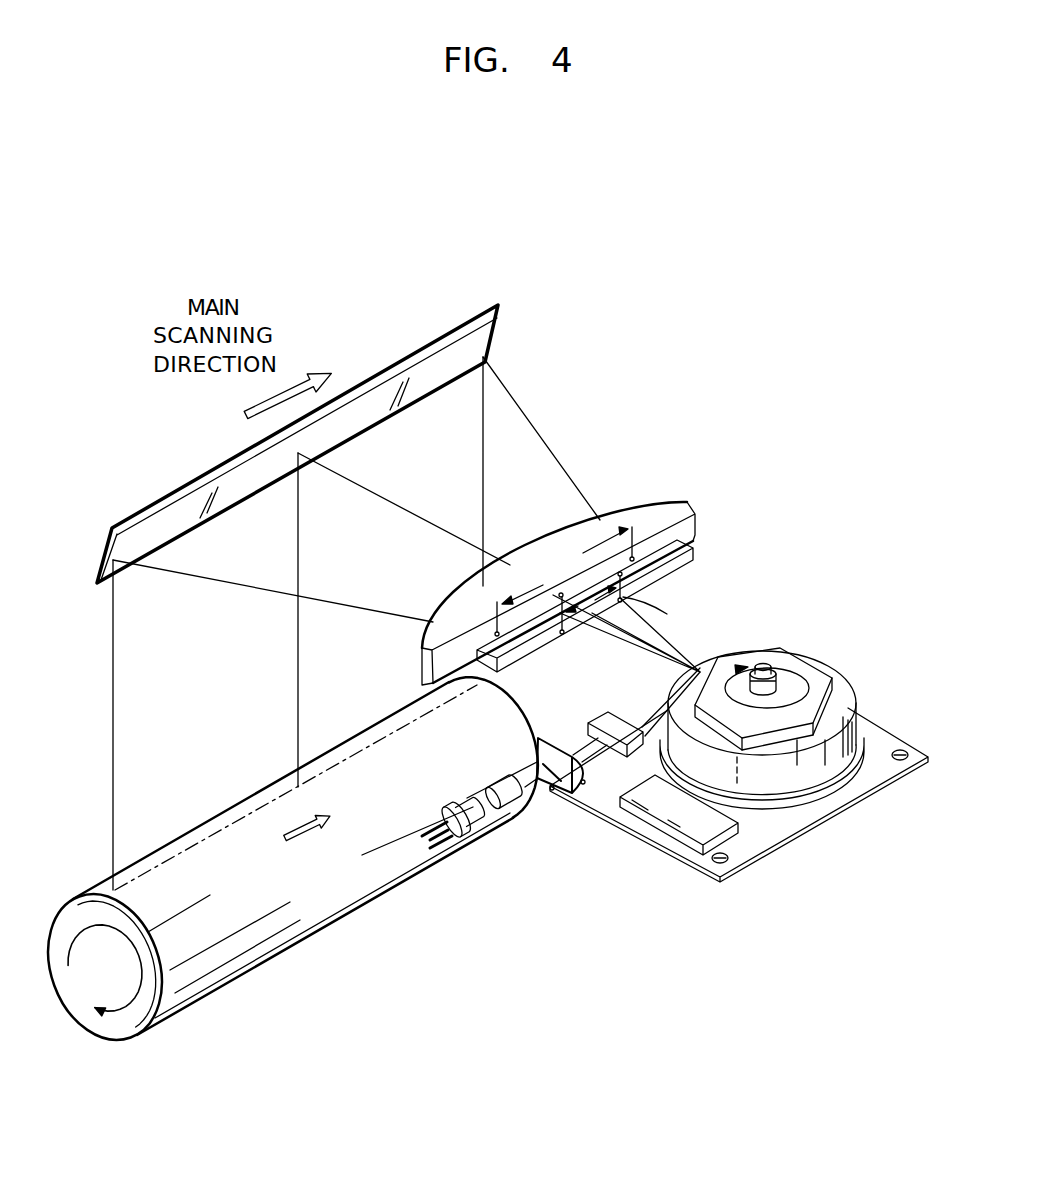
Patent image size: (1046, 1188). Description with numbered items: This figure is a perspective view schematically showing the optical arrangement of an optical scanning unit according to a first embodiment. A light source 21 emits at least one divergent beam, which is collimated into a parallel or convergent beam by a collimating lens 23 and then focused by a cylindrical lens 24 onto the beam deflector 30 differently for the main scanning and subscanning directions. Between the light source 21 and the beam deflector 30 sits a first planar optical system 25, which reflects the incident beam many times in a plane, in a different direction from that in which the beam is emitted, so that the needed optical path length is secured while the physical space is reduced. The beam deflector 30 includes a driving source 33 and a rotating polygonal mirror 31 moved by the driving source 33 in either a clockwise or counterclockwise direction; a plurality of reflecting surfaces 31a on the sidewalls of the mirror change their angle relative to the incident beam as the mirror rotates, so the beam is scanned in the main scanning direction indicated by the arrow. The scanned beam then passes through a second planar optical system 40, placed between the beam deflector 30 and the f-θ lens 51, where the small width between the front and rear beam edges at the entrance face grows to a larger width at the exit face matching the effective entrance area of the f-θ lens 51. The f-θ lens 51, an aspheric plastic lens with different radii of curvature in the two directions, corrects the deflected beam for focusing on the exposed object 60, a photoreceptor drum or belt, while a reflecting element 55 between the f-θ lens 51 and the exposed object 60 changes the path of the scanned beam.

The light source 21 is at (462, 803).
The collimating lens 23 is at (504, 780).
The cylindrical lens 24 is at (548, 740).
The first planar optical system 25 is at (607, 711).
The beam deflector 30 is at (779, 713).
The rotating polygonal mirror 31 is at (813, 675).
The reflecting surface 31a is at (788, 730).
The driving source 33 is at (847, 737).
The second planar optical system 40 is at (708, 553).
The f-θ lens 51 is at (697, 517).
The reflecting element 55 is at (503, 338).
The exposed object 60 is at (210, 818).